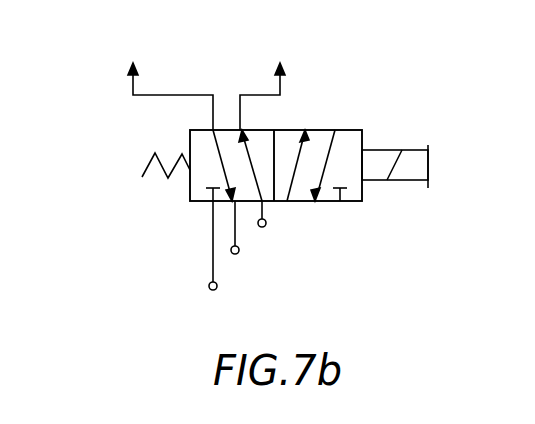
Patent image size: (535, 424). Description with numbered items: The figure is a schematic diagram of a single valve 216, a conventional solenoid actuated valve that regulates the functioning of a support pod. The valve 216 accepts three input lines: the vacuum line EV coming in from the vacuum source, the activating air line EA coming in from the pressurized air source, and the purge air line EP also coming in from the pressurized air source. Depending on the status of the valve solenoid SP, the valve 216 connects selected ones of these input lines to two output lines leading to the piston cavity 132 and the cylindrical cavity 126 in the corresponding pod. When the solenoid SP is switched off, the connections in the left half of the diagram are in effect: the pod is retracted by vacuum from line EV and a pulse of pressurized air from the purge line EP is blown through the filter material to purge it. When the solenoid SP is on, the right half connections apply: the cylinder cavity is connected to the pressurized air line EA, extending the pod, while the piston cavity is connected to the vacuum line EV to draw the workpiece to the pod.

The valve 216 is at (304, 179).
The cylindrical cavity 126 is at (133, 71).
The piston cavity 132 is at (297, 71).
The valve solenoid SP is at (390, 150).
The purge air line EP is at (305, 219).
The vacuum line EV is at (288, 234).
The activating air line EA is at (244, 253).